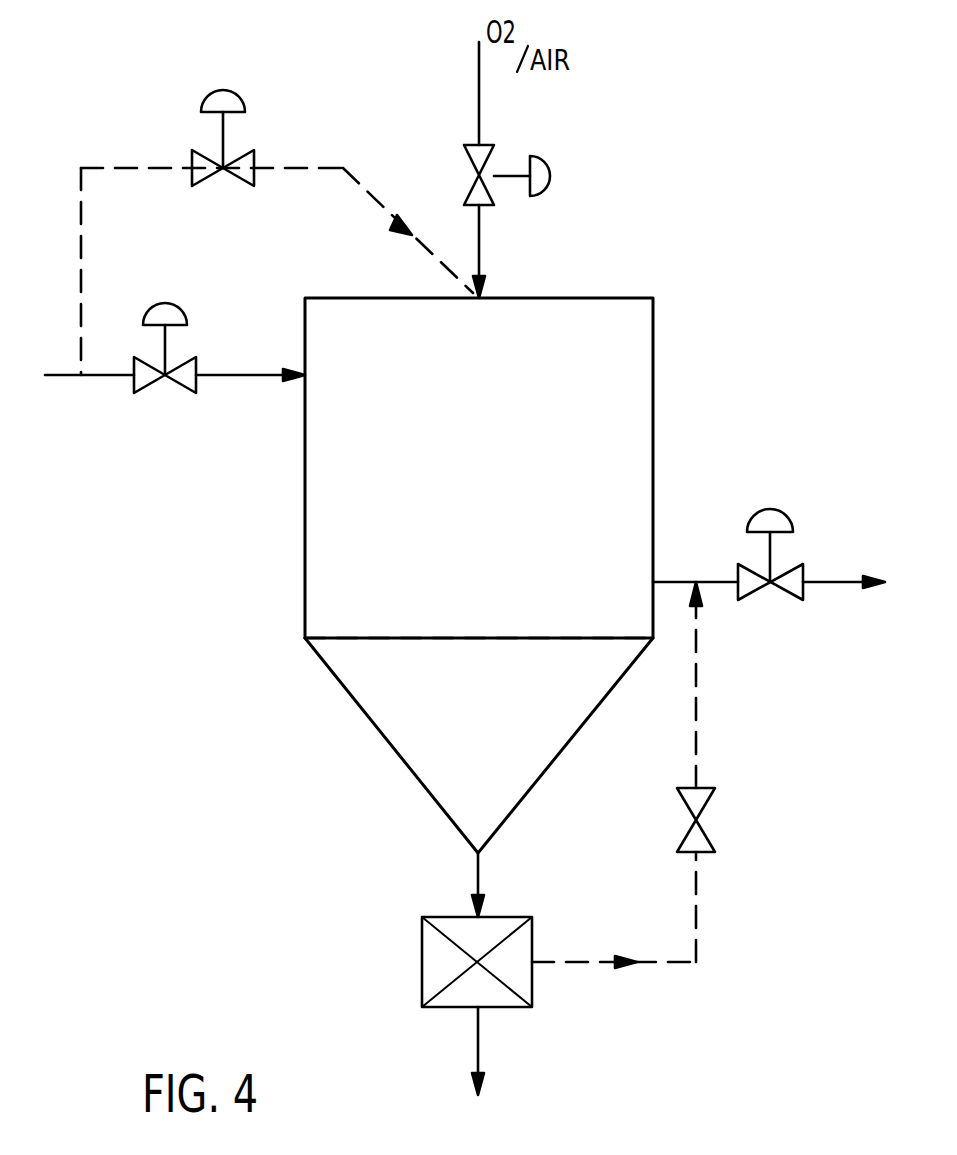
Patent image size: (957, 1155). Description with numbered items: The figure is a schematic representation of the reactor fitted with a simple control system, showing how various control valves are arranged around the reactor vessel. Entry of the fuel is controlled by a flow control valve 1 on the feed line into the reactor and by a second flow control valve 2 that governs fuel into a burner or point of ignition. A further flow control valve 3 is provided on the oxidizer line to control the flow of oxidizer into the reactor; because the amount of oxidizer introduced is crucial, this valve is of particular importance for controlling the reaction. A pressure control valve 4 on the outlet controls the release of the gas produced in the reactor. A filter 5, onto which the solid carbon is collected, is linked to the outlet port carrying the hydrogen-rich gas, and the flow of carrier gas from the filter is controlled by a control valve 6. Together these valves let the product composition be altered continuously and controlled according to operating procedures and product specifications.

The flow control valve 1 is at (150, 383).
The flow control valve 2 is at (223, 128).
The flow control valve 3 is at (500, 178).
The pressure control valve 4 is at (770, 553).
The filter 5 is at (422, 962).
The control valve 6 is at (688, 818).